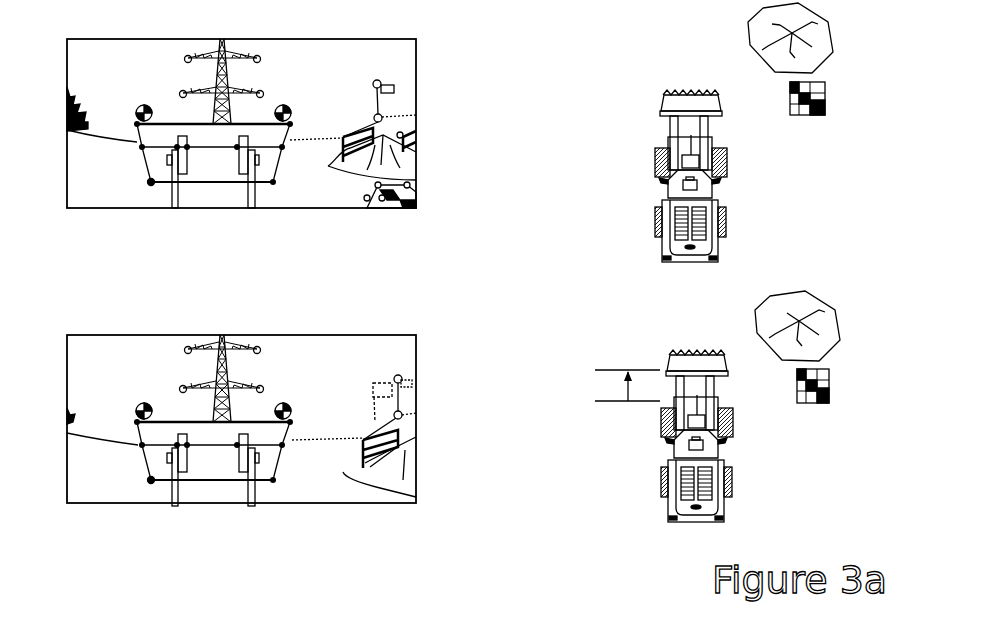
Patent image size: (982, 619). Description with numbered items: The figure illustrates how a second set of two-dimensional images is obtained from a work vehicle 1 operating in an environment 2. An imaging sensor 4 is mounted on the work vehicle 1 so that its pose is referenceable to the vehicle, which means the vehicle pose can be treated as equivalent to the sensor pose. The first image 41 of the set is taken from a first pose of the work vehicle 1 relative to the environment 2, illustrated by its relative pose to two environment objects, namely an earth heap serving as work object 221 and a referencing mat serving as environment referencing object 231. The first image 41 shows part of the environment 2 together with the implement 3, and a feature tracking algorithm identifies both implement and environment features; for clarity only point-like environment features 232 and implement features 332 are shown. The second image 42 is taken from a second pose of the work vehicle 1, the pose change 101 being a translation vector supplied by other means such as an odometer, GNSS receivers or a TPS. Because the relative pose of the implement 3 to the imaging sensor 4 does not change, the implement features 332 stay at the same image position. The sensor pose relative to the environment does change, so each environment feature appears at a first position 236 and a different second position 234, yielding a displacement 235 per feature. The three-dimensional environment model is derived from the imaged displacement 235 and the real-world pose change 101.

The work vehicle 1 is at (632, 108).
The environment 2 is at (372, 65).
The implement 3 is at (183, 123).
The imaging sensor 4 is at (700, 188).
The first image 41 is at (297, 40).
The second image 42 is at (297, 333).
The pose change 101 is at (625, 392).
The work object 221 is at (750, 40).
The environment referencing object 231 is at (797, 115).
The environment feature 232 is at (382, 83).
The environment feature position in second image 234 is at (398, 378).
The displacement 235 is at (390, 383).
The environment feature position in first image 236 is at (370, 404).
The implement feature 332 is at (152, 182).